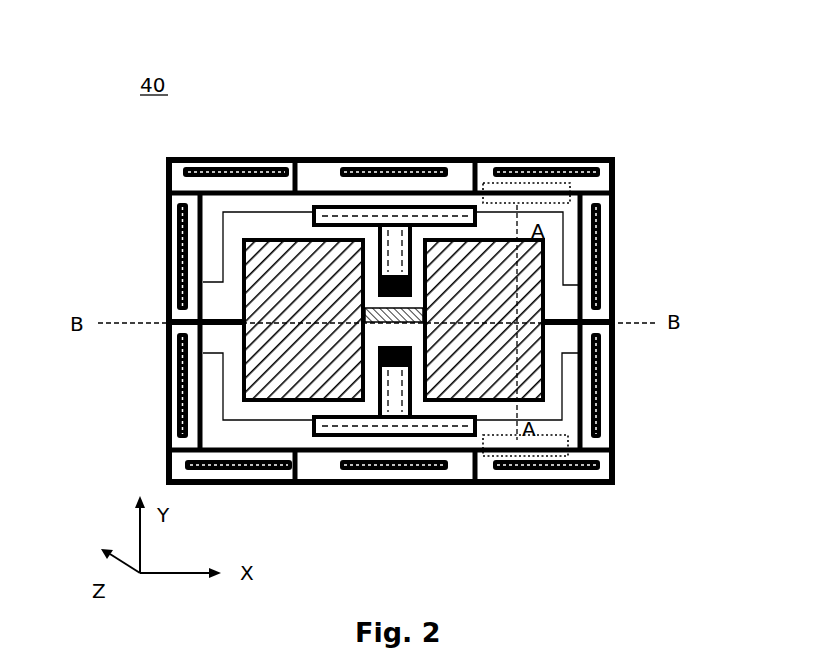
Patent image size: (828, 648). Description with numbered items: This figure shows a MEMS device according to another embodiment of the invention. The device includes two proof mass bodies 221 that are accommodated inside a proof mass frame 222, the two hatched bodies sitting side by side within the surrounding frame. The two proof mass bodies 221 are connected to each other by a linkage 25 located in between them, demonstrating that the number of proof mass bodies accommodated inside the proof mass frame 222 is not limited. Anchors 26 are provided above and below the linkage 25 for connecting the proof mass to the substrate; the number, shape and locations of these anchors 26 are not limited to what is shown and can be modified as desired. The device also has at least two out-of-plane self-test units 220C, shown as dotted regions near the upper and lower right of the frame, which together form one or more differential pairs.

The proof mass frame 222 is at (307, 157).
The proof mass body 221 is at (322, 238).
The out-of-plane self-test unit 220C is at (534, 183).
The anchor 26 is at (396, 277).
The linkage 25 is at (370, 325).